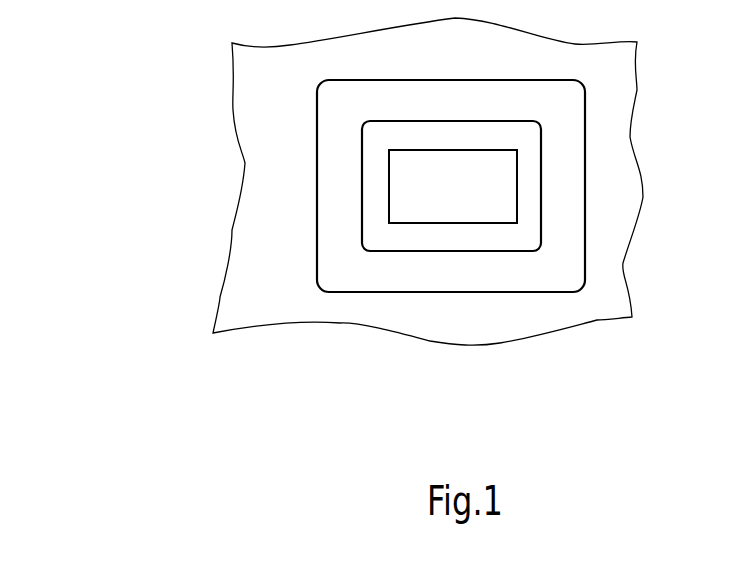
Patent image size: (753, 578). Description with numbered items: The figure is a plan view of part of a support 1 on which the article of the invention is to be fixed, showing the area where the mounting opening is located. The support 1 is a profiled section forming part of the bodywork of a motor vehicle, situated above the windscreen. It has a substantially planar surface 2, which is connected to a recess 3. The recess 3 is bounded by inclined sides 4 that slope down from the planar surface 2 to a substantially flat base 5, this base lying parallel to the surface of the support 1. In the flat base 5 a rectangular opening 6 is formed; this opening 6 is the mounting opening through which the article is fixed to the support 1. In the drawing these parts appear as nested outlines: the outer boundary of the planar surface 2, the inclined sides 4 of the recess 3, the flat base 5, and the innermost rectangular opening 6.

The support 1 is at (130, 63).
The planar surface 2 is at (258, 155).
The recess 3 is at (281, 220).
The inclined sides 4 is at (388, 273).
The flat base 5 is at (454, 235).
The rectangular opening 6 is at (478, 195).